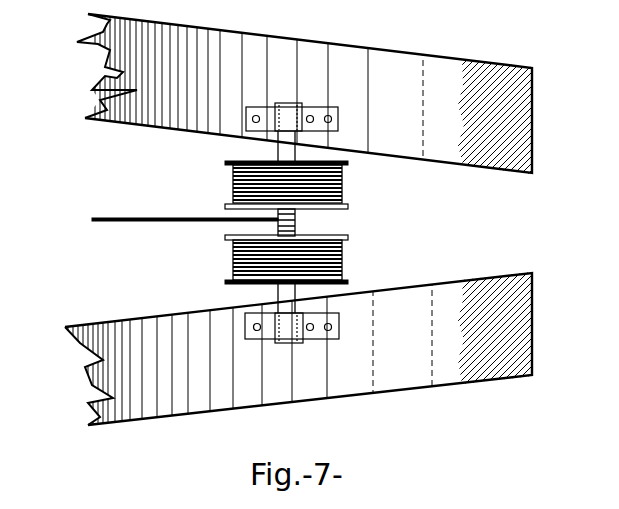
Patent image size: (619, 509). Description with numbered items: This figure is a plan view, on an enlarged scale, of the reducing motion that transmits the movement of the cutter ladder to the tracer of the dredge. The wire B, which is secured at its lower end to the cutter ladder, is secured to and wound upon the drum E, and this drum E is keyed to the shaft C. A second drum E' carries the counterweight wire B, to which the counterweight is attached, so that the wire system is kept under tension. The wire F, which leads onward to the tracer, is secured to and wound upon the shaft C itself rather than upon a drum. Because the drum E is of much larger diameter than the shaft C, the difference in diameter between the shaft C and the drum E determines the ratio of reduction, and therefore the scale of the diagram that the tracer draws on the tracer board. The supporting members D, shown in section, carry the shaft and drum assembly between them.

The frame bars D is at (413, 121).
The wire B is at (344, 178).
The shaft C is at (295, 222).
The drum E' is at (267, 178).
The drum E is at (267, 266).
The wire F is at (156, 216).